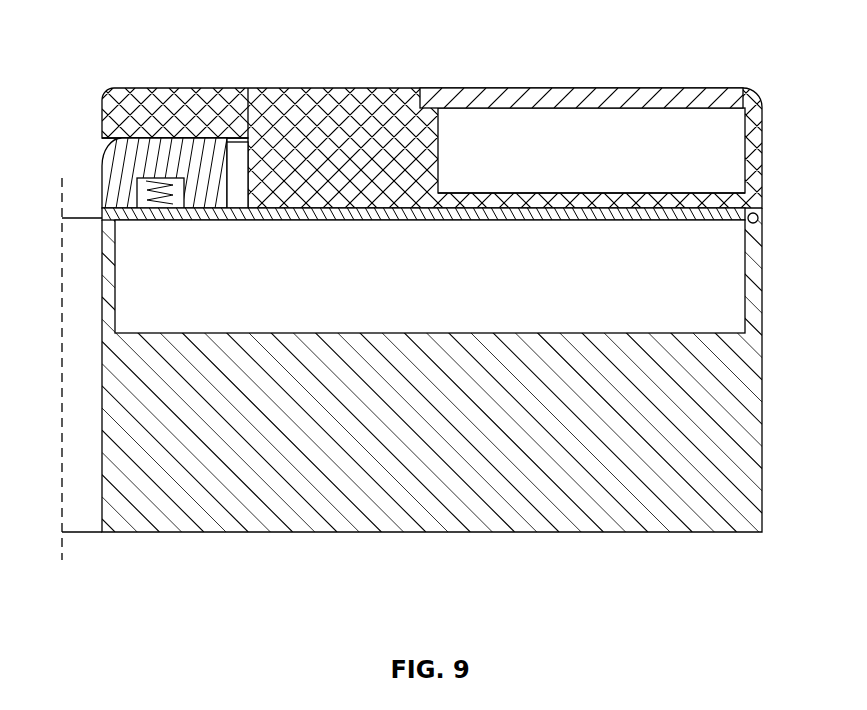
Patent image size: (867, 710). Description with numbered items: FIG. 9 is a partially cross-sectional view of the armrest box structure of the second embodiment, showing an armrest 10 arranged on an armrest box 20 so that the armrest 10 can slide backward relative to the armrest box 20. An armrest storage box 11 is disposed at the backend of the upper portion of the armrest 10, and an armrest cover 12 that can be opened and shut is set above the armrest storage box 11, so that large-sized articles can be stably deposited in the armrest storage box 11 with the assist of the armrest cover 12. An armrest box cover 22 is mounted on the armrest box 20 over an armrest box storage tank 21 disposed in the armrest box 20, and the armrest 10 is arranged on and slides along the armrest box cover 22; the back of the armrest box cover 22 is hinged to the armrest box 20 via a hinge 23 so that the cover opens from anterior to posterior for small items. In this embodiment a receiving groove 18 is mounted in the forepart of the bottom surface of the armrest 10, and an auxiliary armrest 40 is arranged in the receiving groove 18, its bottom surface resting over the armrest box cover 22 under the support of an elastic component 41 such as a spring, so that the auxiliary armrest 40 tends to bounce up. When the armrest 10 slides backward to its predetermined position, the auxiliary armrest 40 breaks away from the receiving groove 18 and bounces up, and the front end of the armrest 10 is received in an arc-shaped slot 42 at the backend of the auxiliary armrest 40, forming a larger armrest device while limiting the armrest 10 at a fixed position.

The armrest 10 is at (355, 112).
The armrest storage box 11 is at (613, 138).
The armrest cover 12 is at (532, 102).
The receiving groove 18 is at (103, 148).
The armrest box 20 is at (560, 488).
The armrest box storage tank 21 is at (305, 293).
The armrest box cover 22 is at (672, 197).
The hinge 23 is at (758, 215).
The auxiliary armrest 40 is at (192, 148).
The elastic component 41 is at (130, 83).
The arc-shaped slot 42 is at (237, 153).